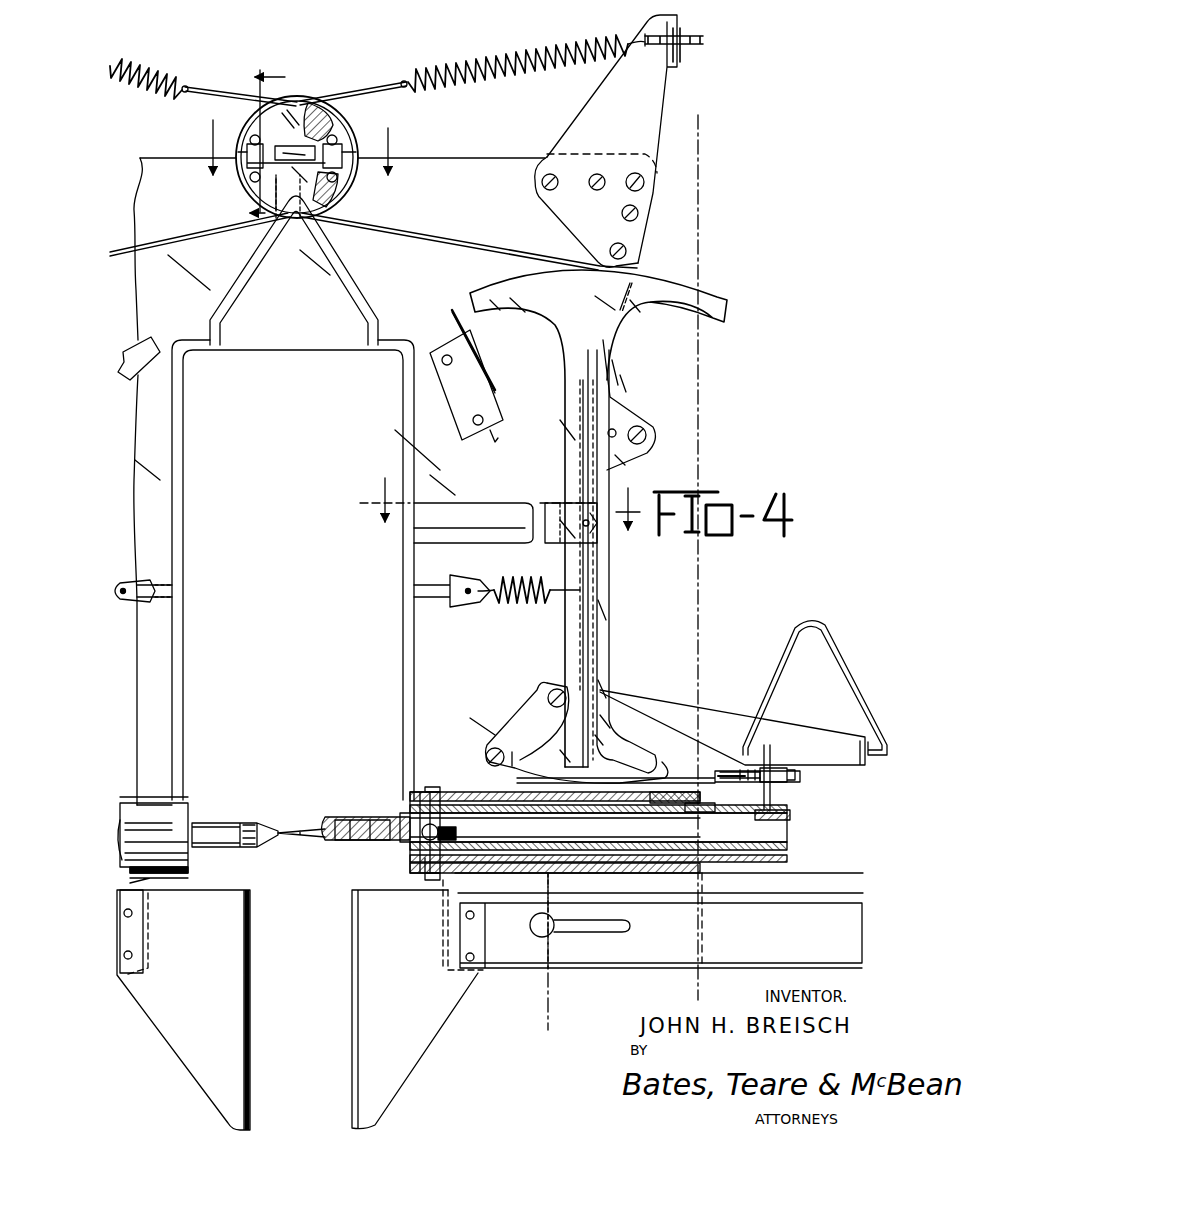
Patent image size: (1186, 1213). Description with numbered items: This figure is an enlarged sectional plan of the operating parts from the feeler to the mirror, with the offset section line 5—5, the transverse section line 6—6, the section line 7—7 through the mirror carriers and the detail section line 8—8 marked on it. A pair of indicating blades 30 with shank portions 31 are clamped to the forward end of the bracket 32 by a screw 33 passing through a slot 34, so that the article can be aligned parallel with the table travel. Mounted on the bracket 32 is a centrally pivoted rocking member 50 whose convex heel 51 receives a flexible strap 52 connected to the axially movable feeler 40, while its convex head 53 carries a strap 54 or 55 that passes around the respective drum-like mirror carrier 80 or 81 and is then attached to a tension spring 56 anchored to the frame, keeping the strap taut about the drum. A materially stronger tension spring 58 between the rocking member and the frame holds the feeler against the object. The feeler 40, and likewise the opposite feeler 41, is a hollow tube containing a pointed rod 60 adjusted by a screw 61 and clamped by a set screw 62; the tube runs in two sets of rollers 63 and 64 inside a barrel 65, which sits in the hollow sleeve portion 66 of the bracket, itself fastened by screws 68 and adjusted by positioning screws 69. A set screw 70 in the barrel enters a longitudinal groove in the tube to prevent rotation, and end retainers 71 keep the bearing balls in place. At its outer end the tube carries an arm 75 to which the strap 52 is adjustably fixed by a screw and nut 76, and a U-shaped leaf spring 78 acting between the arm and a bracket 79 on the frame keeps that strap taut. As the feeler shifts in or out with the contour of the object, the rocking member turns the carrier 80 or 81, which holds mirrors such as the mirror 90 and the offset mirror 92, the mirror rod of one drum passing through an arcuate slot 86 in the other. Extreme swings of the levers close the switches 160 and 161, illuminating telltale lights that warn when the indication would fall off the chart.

The offset section line 5 is at (740, 117).
The section line 6 is at (500, 521).
The section line 7 is at (299, 159).
The section line 8 is at (255, 145).
The indicating blade 30 is at (250, 978).
The shank portion 31 is at (135, 937).
The bracket 32 is at (555, 975).
The screw 33 is at (530, 925).
The slot 34 is at (600, 930).
The feeler 40 is at (375, 817).
The feeler 41 is at (228, 822).
The rocking member 50 is at (606, 610).
The convex heel 51 is at (618, 768).
The flexible strap 52 is at (683, 770).
The convex head 53 is at (516, 285).
The strap 54 is at (340, 86).
The strap 55 is at (205, 82).
The tension spring 56 is at (168, 62).
The tension spring 58 is at (496, 612).
The pointed rod 60 is at (312, 826).
The screw 61 is at (466, 836).
The set screw 62 is at (345, 820).
The rollers 63 is at (448, 815).
The rollers 64 is at (700, 798).
The barrel 65 is at (132, 815).
The hollow sleeve portion 66 is at (641, 910).
The screws 68 is at (644, 184).
The positioning screws 69 is at (432, 787).
The set screw 70 is at (593, 827).
The end retainers 71 is at (716, 808).
The arm 75 is at (775, 805).
The screw and nut 76 is at (770, 768).
The U-shaped leaf spring 78 is at (780, 668).
The bracket 79 is at (735, 722).
The mirror carrier 80 is at (333, 120).
The mirror carrier 81 is at (272, 122).
The arcuate slot 86 is at (335, 200).
The mirror 90 is at (318, 152).
The mirror 92 is at (250, 150).
The switch 160 is at (150, 345).
The switch 161 is at (448, 340).